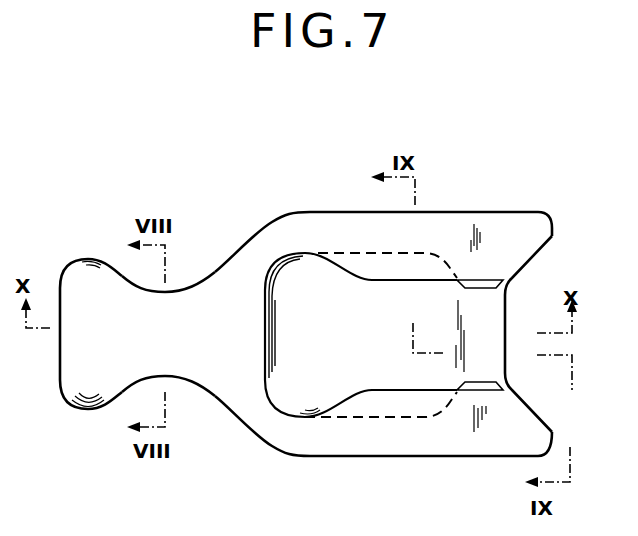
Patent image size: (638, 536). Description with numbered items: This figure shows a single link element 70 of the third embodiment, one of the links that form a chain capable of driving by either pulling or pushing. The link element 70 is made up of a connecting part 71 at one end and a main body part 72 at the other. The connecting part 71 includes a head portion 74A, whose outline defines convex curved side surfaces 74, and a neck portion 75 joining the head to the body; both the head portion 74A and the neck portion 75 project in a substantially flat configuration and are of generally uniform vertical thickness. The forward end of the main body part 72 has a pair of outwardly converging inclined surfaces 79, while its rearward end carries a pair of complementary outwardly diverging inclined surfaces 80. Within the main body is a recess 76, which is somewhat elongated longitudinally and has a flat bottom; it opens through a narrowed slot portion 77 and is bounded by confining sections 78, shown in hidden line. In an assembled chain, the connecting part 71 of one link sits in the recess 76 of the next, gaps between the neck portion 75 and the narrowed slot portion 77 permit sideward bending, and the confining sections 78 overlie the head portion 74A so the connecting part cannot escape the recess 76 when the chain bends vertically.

The link element 70 is at (304, 204).
The connecting part 71 is at (116, 254).
The main body part 72 is at (491, 206).
The convex curved side surfaces 74 is at (88, 258).
The head portion 74A is at (67, 410).
The neck portion 75 is at (180, 368).
The recess 76 is at (308, 393).
The narrowed slot portion 77 is at (491, 324).
The confining sections 78 is at (365, 262).
The outwardly converging inclined surfaces 79 is at (239, 248).
The outwardly diverging inclined surfaces 80 is at (537, 250).